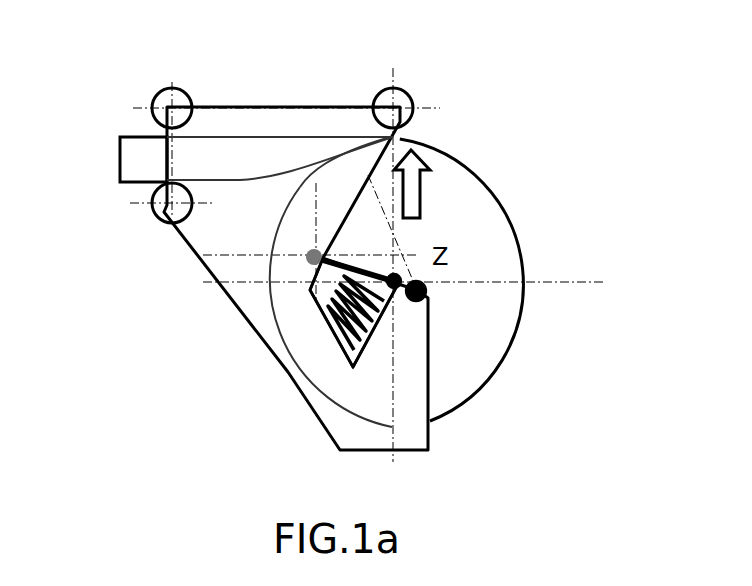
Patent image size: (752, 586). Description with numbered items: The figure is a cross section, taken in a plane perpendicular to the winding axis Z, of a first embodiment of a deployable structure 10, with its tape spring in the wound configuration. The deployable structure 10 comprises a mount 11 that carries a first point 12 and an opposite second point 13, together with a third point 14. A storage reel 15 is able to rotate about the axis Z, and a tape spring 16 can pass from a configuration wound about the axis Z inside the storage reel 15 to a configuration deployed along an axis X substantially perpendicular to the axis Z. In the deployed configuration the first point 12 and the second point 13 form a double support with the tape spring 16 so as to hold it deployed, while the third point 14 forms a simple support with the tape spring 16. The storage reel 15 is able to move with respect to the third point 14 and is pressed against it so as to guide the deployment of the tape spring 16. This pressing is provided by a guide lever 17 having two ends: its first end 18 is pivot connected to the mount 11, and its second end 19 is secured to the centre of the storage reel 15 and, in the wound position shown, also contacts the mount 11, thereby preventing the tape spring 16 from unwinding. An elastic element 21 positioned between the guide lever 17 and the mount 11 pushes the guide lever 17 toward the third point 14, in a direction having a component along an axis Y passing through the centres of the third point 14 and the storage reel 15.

The deployable structure 10 is at (136, 50).
The mount 11 is at (308, 84).
The first point 12 is at (153, 108).
The second point 13 is at (158, 219).
The third point 14 is at (413, 100).
The storage reel 15 is at (507, 380).
The tape spring 16 is at (247, 137).
The guide lever 17 is at (381, 270).
The first end of the guide lever 18 is at (308, 257).
The second end of the guide lever 19 is at (425, 295).
The elastic element 21 is at (322, 298).